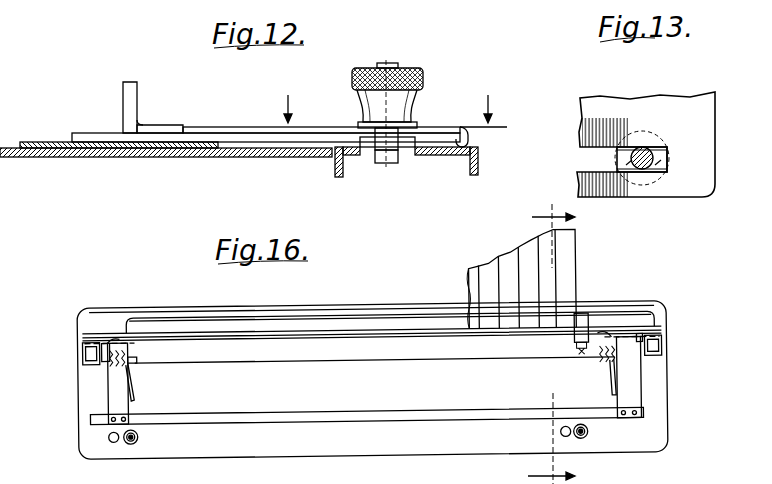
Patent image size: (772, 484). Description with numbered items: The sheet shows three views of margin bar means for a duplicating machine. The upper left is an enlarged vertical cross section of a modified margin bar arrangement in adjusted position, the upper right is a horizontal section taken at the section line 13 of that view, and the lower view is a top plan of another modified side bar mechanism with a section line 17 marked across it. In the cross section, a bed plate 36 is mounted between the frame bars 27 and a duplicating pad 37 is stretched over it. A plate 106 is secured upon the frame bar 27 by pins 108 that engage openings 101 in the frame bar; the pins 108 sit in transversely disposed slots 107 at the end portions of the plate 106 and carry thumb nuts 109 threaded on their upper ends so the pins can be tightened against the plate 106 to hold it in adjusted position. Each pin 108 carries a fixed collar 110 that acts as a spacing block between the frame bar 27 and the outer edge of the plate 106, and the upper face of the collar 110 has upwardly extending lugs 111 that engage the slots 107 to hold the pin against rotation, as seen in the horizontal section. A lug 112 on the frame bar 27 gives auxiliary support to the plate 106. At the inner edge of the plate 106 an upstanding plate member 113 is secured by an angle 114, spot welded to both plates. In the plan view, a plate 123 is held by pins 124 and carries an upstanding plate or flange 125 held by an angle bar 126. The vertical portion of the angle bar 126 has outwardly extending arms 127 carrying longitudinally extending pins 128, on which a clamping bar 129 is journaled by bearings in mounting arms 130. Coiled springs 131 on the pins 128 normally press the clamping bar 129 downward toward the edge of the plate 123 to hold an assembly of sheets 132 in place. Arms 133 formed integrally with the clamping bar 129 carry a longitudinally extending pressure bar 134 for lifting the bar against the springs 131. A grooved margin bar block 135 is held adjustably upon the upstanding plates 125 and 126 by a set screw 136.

In FIG. 12, the section line 13— 13 is at (389, 111).
In FIG. 16, the section line 17— 17 is at (551, 340).
In FIG. 12, the frame bar 27 is at (478, 160).
In FIG. 12, the bed plate 36 is at (112, 156).
In FIG. 12, the duplicating pad 37 is at (50, 152).
In FIG. 12, the openings 101 is at (366, 152).
In FIG. 12, the plate 106 is at (232, 132).
In FIG. 13, the plate 106 is at (607, 104).
In FIG. 13, the slots 107 is at (596, 150).
In FIG. 12, the pins 108 is at (394, 162).
In FIG. 13, the pins 108 is at (652, 148).
In FIG. 12, the thumb nuts 109 is at (410, 68).
In FIG. 12, the collars 110 is at (410, 137).
In FIG. 13, the collars 110 is at (616, 176).
In FIG. 13, the lugs 111 is at (667, 170).
In FIG. 12, the lug 112 is at (442, 149).
In FIG. 12, the upstanding plate member 113 is at (126, 96).
In FIG. 12, the angle 114 is at (140, 90).
In FIG. 16, the plate 123 is at (410, 444).
In FIG. 16, the pins 124 is at (130, 445).
In FIG. 16, the upstanding plate or flange 125 is at (290, 330).
In FIG. 16, the angle bar 126 is at (376, 362).
In FIG. 16, the arms 127 is at (85, 345).
In FIG. 16, the pins 128 is at (138, 362).
In FIG. 16, the clamping bar 129 is at (300, 315).
In FIG. 16, the mounting arms 130 is at (124, 344).
In FIG. 16, the coiled springs 131 is at (135, 392).
In FIG. 16, the sheets 132 is at (512, 266).
In FIG. 16, the arms 133 is at (116, 404).
In FIG. 16, the pressure bar 134 is at (304, 413).
In FIG. 16, the grooved margin bar block 135 is at (582, 314).
In FIG. 16, the set screw 136 is at (572, 354).